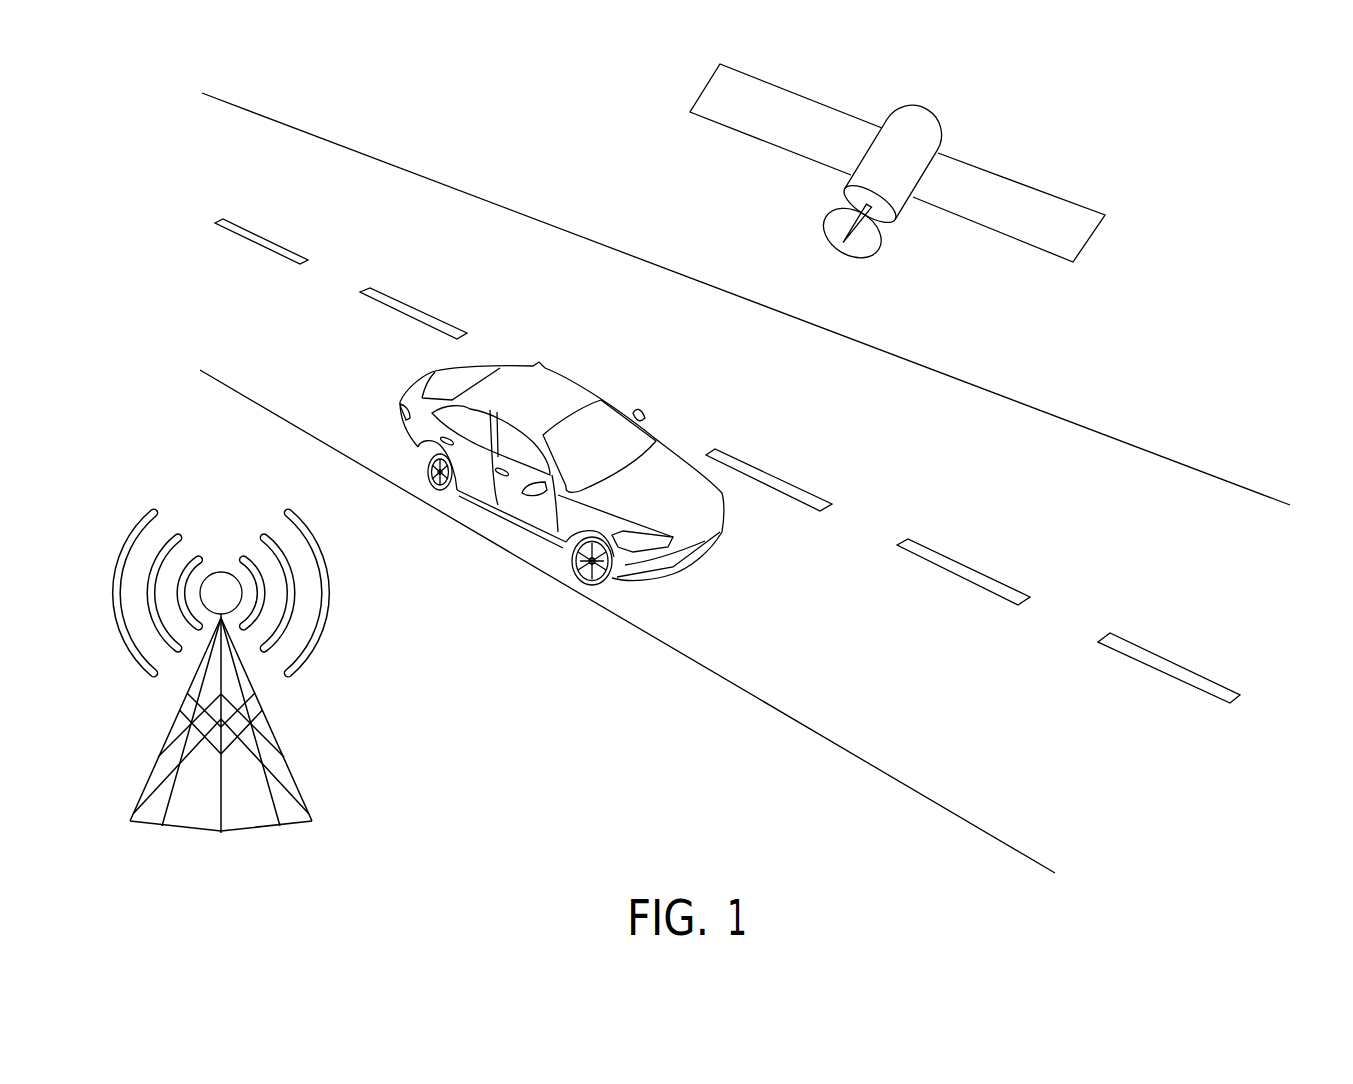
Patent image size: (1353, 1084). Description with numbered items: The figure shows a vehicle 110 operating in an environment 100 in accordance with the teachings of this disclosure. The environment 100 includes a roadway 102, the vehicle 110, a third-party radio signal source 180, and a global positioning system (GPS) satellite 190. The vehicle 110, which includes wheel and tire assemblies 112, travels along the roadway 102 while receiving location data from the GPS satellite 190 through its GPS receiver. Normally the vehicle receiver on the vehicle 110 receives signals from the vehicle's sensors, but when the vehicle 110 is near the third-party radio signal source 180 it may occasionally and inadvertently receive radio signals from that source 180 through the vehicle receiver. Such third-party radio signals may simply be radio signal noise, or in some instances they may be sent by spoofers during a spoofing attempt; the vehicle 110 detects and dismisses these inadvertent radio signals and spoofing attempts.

The environment 100 is at (448, 119).
The roadway 102 is at (1025, 503).
The vehicle 110 is at (512, 390).
The wheel and tire assemblies 112 is at (580, 567).
The third-party radio signal source 180 is at (298, 784).
The global positioning system (GPS) satellite 190 is at (1058, 218).